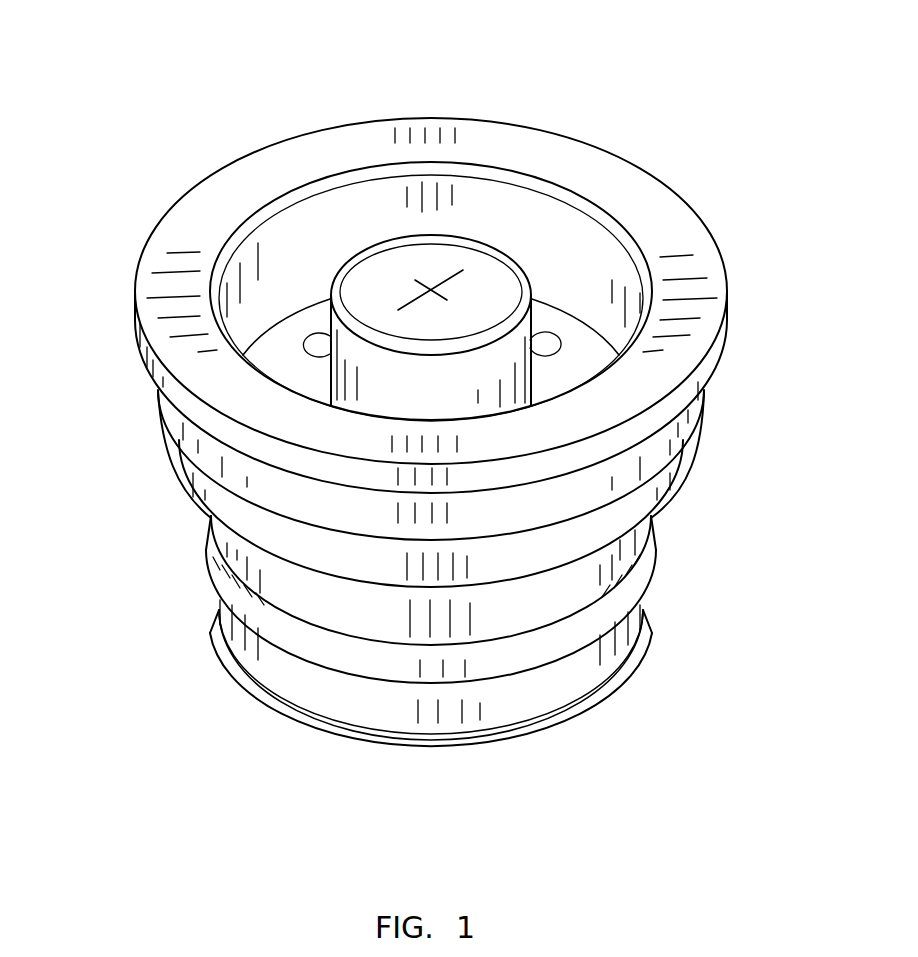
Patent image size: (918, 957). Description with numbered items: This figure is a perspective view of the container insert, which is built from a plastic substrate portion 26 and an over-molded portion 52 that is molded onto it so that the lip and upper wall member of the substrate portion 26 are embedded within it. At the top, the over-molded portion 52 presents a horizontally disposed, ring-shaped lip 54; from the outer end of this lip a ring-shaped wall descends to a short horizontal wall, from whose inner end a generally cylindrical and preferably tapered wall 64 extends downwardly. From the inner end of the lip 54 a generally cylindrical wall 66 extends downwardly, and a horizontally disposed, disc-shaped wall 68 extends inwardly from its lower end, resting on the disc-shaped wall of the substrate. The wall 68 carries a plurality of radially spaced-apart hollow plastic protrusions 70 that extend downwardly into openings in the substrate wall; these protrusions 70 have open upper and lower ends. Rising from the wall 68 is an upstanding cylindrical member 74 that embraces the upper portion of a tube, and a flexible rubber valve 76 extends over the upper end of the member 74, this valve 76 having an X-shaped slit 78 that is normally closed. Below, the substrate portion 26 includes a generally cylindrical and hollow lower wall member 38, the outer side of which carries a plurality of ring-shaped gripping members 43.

The substrate portion 26 is at (422, 404).
The lower wall member 38 is at (608, 573).
The ring-shaped gripping members 43 is at (628, 600).
The over-molded portion 52 is at (130, 352).
The ring-shaped lip 54 is at (647, 192).
The tapered wall 64 is at (647, 460).
The cylindrical wall 66 is at (333, 241).
The disc-shaped wall 68 is at (576, 388).
The hollow plastic protrusions 70 is at (547, 340).
The upstanding cylindrical member 74 is at (370, 380).
The flexible rubber valve 76 is at (505, 301).
The X-shaped slit 78 is at (452, 275).